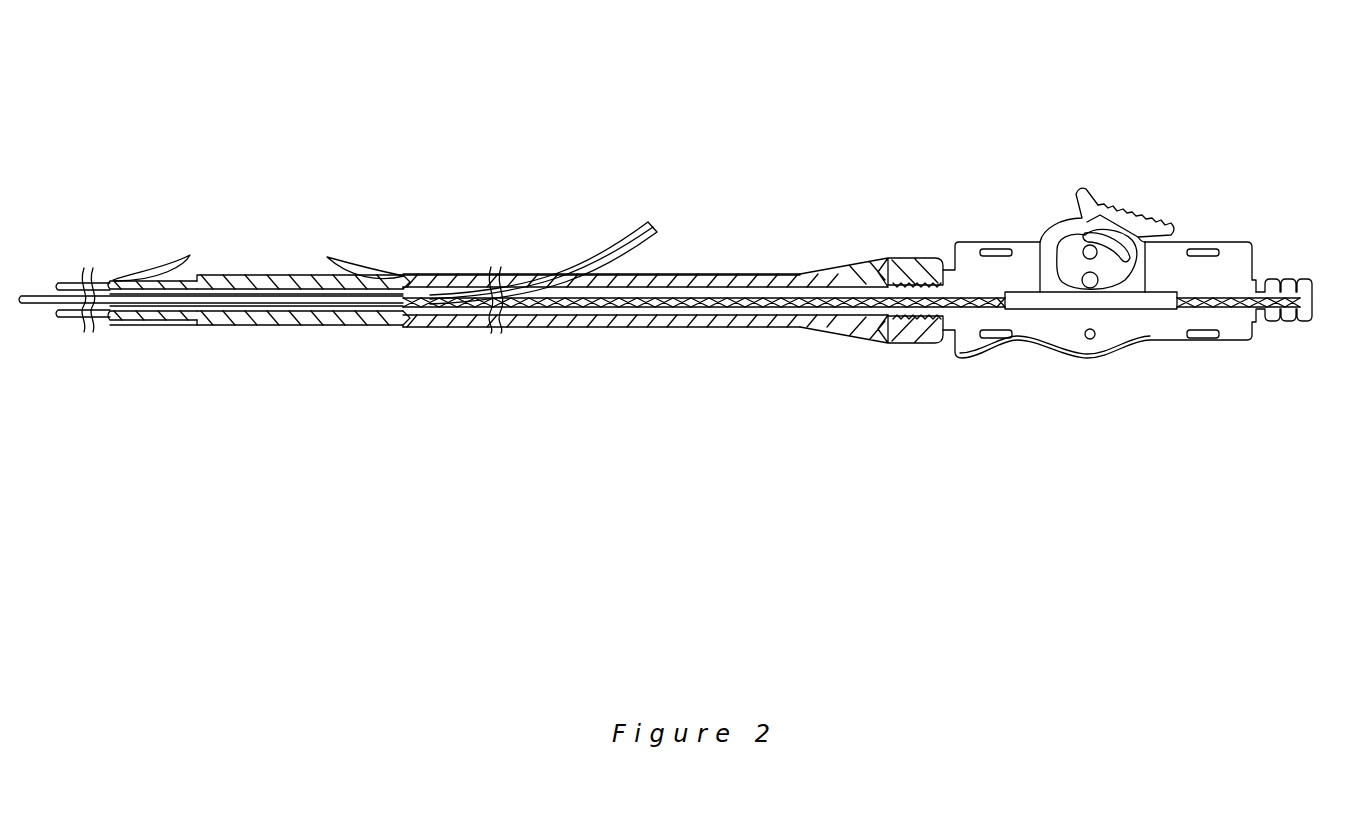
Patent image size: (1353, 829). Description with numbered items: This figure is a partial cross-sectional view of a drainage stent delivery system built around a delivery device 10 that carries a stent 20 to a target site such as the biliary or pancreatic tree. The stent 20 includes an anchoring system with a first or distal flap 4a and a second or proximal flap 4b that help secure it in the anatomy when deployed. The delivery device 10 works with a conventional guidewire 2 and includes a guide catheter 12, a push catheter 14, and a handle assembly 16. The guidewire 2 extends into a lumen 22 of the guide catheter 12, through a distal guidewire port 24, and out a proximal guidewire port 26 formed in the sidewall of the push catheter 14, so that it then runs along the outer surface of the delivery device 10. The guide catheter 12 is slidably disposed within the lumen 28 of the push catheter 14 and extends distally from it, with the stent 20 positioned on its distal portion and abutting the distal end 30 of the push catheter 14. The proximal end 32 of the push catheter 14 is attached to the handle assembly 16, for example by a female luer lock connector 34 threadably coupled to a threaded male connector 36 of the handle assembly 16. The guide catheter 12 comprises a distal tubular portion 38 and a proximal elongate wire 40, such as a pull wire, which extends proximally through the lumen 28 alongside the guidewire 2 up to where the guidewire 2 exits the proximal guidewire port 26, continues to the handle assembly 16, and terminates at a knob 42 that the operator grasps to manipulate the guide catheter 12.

The delivery device 10 is at (705, 108).
The guidewire 2 is at (47, 298).
The distal guidewire port 24 is at (54, 313).
The guide catheter 12 is at (68, 285).
The distal tubular portion 38 is at (200, 322).
The first or distal flap 4a is at (172, 264).
The second or proximal flap 4b is at (342, 268).
The stent 20 is at (260, 322).
The lumen of the guide catheter 22 is at (242, 295).
The distal end of the push catheter 30 is at (403, 322).
The push catheter 14 is at (437, 322).
The lumen of the push catheter 28 is at (693, 282).
The proximal guidewire port 26 is at (573, 270).
The proximal elongate wire 40 is at (537, 318).
The proximal end of the push catheter 32 is at (892, 258).
The female luer lock connector 34 is at (897, 343).
The threaded male connector 36 is at (920, 295).
The handle assembly 16 is at (1049, 376).
The knob 42 is at (1290, 280).